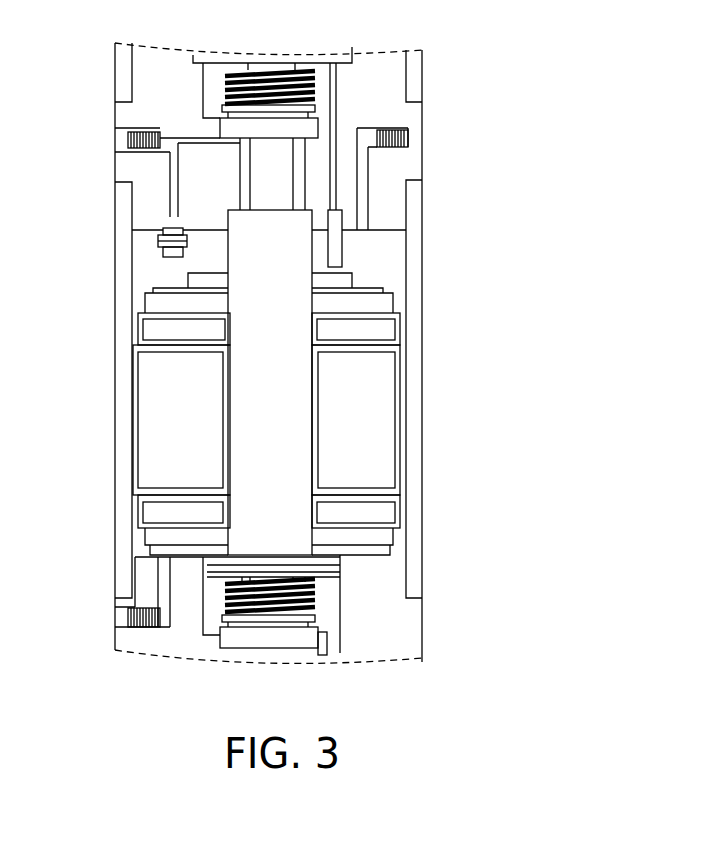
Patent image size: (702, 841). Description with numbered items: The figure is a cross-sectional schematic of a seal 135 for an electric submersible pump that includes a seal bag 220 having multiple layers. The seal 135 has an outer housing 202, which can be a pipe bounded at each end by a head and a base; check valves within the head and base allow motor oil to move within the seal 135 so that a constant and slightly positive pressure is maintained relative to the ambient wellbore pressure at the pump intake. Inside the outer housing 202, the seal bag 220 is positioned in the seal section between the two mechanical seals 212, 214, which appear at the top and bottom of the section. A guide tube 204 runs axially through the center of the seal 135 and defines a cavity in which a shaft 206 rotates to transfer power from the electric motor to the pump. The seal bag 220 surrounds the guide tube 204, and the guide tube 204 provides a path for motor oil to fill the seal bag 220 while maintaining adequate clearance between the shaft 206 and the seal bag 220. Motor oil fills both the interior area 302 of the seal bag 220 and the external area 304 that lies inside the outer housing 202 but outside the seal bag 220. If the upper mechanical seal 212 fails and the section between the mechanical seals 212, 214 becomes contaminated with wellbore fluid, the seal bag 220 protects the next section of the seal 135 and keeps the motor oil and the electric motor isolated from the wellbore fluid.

The seal 135 is at (578, 336).
The outer housing 202 is at (423, 498).
The guide tube 204 is at (277, 417).
The shaft 206 is at (278, 188).
The mechanical seal 212 is at (267, 128).
The mechanical seal 214 is at (282, 637).
The seal bag 220 is at (157, 332).
The interior area 302 is at (157, 453).
The external area 304 is at (370, 262).